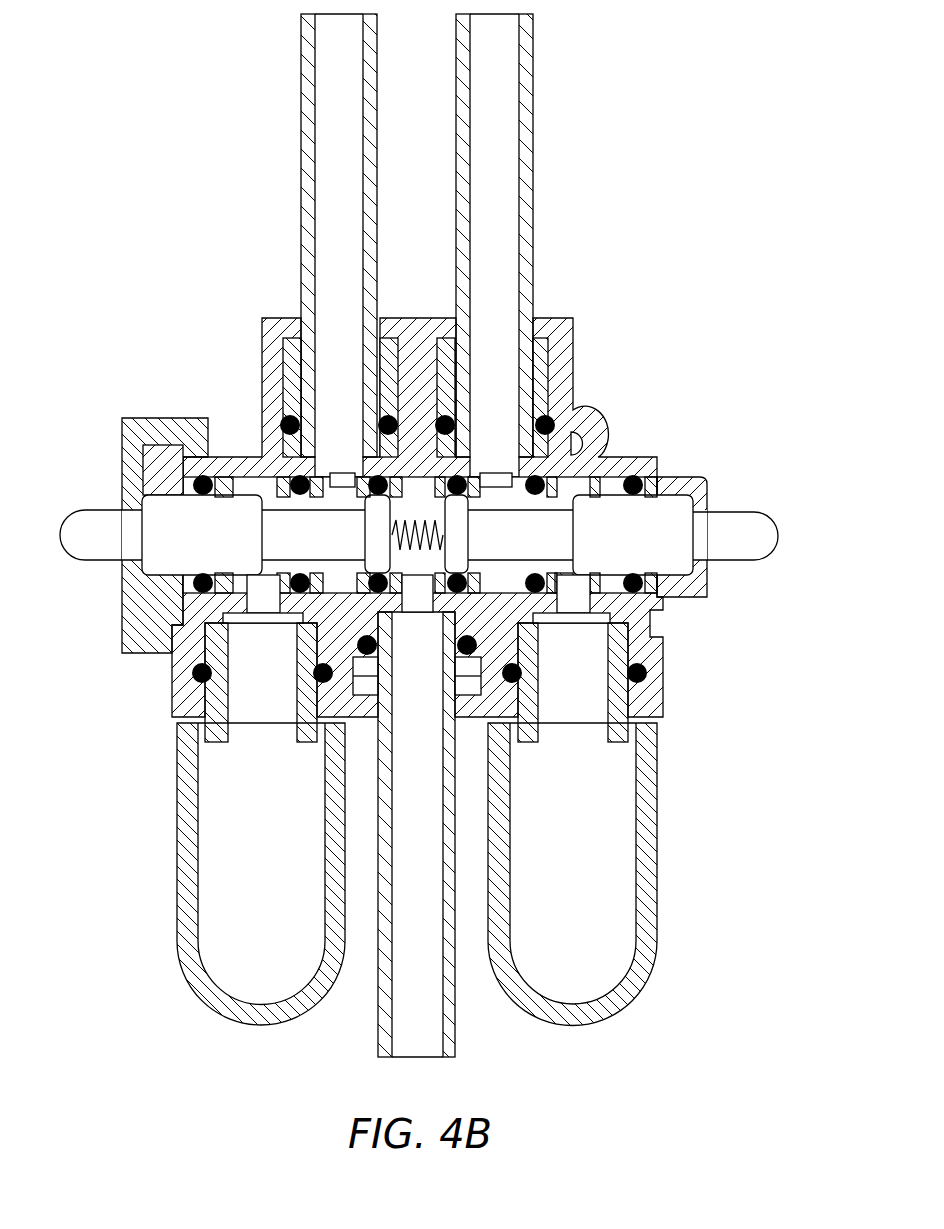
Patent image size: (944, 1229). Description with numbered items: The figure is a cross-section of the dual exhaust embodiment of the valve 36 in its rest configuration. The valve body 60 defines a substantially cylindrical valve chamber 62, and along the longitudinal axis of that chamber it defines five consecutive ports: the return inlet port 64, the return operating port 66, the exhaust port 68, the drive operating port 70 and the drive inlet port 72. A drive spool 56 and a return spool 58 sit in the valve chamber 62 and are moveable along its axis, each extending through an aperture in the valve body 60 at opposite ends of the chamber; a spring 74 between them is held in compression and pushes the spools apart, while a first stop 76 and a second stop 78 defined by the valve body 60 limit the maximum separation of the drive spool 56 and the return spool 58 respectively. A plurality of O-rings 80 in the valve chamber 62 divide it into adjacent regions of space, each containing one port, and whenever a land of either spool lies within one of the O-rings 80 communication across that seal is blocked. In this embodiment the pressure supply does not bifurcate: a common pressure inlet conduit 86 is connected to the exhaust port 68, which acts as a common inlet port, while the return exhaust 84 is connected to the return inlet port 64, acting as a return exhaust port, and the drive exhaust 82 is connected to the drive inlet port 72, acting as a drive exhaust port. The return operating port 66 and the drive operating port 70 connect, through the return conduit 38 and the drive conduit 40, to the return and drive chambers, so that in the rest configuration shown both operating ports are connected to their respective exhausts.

The valve 36 is at (684, 410).
The return conduit 38 is at (330, 160).
The drive conduit 40 is at (505, 160).
The drive spool 56 is at (779, 535).
The return spool 58 is at (57, 535).
The valve body 60 is at (237, 467).
The valve chamber 62 is at (568, 565).
The return inlet port 64 is at (262, 590).
The return operating port 66 is at (340, 475).
The exhaust port 68 is at (415, 593).
The drive operating port 70 is at (494, 476).
The drive inlet port 72 is at (572, 592).
The spring 74 is at (375, 532).
The first stop 76 is at (706, 494).
The second stop 78 is at (130, 494).
The O-rings 80 is at (641, 497).
The drive exhaust 82 is at (576, 1025).
The return exhaust 84 is at (258, 1025).
The common pressure inlet conduit 86 is at (428, 1057).